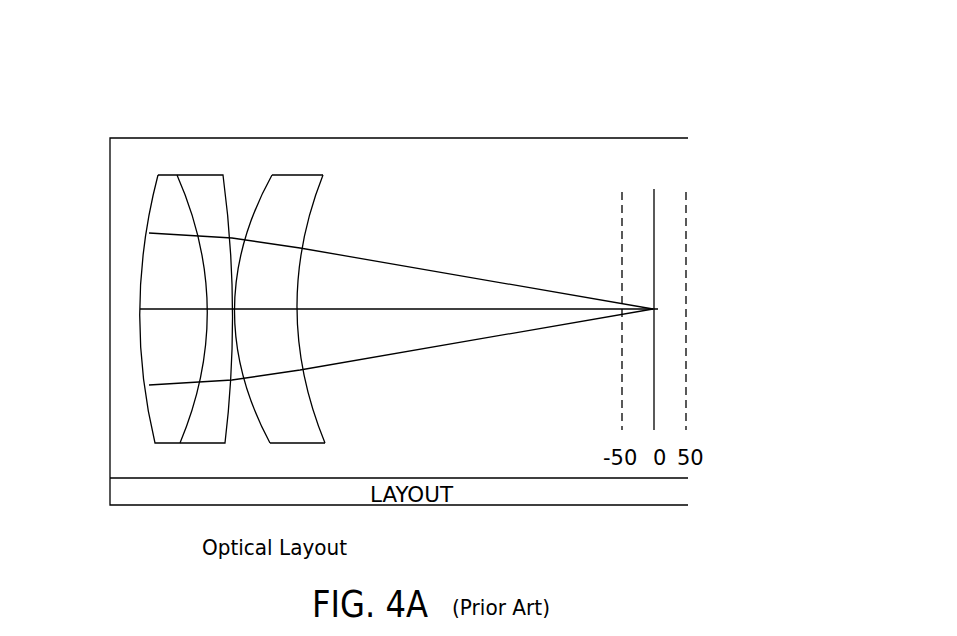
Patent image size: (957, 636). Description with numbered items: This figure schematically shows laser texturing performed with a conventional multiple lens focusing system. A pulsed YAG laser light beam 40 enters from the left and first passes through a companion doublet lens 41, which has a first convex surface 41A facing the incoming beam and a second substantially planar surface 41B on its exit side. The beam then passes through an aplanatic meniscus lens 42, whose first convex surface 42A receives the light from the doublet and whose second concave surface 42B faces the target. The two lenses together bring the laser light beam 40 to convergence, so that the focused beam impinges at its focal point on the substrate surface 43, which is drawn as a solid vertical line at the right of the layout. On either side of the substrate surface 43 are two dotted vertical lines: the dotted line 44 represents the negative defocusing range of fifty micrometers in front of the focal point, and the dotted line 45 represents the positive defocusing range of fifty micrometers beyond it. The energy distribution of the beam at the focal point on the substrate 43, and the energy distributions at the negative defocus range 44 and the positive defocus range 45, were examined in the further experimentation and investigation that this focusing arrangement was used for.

The pulsed YAG laser light beam 40 is at (472, 342).
The companion doublet lens 41 is at (138, 285).
The first convex surface 41A is at (148, 207).
The second substantially planar surface 41B is at (227, 178).
The aplanatic meniscus lens 42 is at (326, 284).
The first convex surface 42A is at (268, 180).
The second concave surface 42B is at (308, 220).
The substrate surface 43 is at (650, 185).
The negative defocusing range 44 is at (608, 227).
The positive defocusing range 45 is at (698, 356).